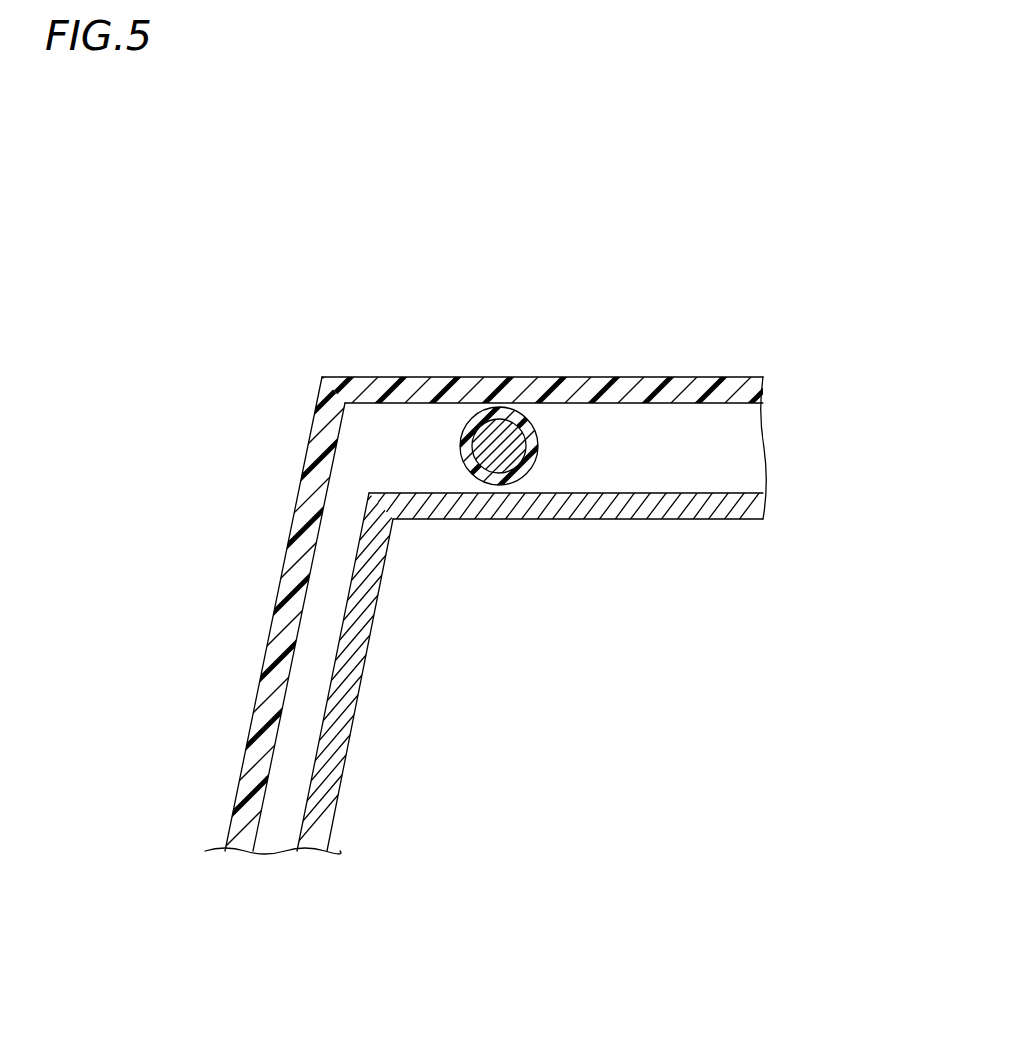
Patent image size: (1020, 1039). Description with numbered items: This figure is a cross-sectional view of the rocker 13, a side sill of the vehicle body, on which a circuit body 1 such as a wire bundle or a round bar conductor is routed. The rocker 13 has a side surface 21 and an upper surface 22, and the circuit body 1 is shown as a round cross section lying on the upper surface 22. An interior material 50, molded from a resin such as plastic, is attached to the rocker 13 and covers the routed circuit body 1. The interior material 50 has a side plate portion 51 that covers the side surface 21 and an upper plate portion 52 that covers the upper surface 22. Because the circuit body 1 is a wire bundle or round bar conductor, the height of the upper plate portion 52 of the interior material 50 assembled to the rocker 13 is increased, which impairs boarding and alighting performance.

The circuit body 1 is at (468, 409).
The rocker 13 is at (501, 567).
The side surface 21 is at (318, 742).
The upper surface 22 is at (675, 493).
The interior material 50 is at (493, 580).
The side plate portion 51 is at (275, 605).
The upper plate portion 52 is at (602, 377).